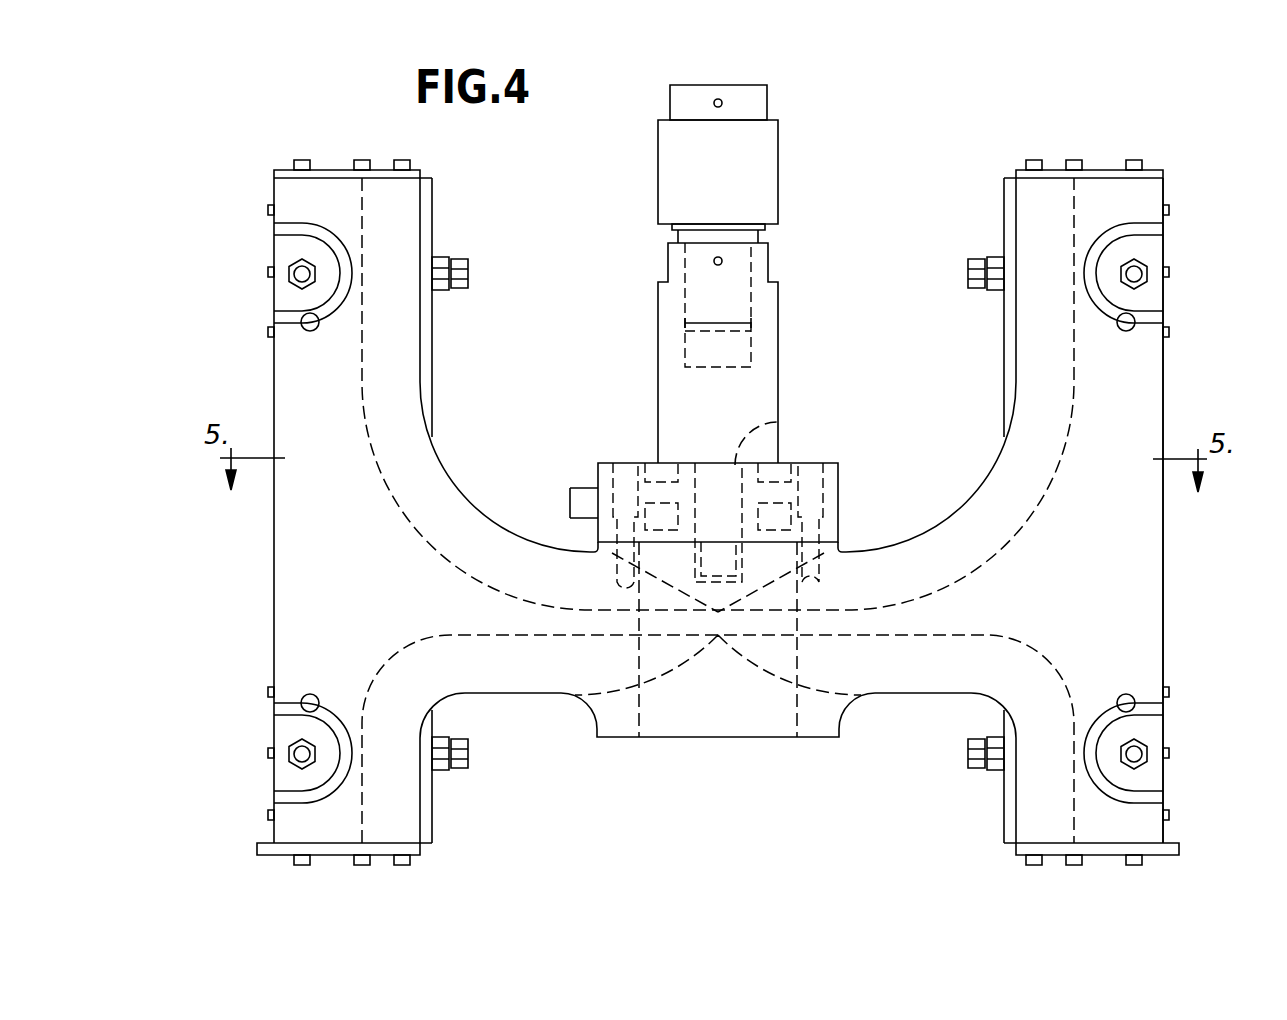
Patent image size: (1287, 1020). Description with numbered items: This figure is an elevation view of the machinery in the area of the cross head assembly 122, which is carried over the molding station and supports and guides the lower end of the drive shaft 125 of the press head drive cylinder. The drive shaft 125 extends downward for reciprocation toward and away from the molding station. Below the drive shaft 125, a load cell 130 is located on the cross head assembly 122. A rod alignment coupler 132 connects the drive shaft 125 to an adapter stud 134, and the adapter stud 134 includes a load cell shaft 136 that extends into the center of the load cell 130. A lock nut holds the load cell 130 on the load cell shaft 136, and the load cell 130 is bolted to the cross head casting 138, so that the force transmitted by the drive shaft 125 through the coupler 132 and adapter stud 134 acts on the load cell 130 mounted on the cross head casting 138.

The cross head assembly 122 is at (1150, 378).
The drive shaft 125 is at (760, 102).
The load cell 130 is at (840, 470).
The rod alignment coupler 132 is at (768, 155).
The adapter stud 134 is at (778, 313).
The load cell shaft 136 is at (780, 420).
The cross head casting 138 is at (1163, 569).